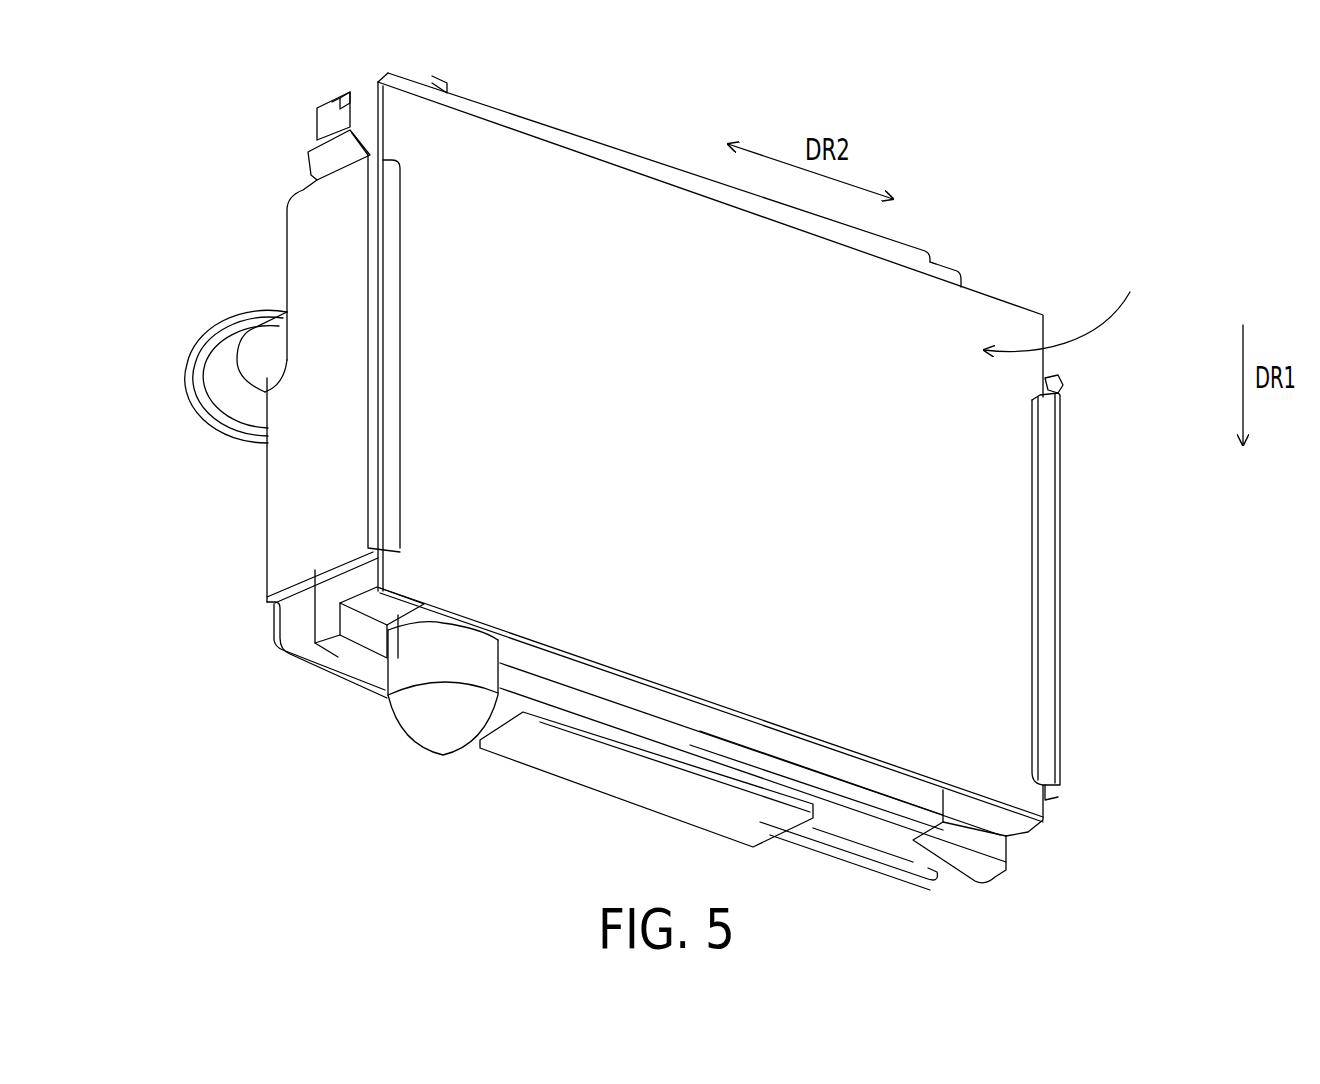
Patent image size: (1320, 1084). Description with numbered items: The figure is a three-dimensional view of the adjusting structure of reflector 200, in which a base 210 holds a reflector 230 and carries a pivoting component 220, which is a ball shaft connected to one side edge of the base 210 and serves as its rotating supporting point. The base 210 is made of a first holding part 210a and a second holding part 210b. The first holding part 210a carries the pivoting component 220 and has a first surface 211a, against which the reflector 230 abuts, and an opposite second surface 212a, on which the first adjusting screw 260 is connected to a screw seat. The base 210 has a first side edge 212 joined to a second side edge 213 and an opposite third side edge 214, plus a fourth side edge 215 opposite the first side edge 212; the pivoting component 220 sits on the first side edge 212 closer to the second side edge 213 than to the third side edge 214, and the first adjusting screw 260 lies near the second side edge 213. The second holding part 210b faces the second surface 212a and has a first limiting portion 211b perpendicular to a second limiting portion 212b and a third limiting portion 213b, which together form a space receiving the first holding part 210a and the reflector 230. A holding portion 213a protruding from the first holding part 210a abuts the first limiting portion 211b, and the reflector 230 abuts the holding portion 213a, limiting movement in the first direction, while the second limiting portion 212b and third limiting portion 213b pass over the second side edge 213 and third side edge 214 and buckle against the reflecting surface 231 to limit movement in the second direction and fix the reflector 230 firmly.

The adjusting structure of reflector 200 is at (1272, 939).
The base 210 is at (269, 686).
The first holding part 210a is at (363, 633).
The second holding part 210b is at (297, 640).
The first surface 211a is at (356, 109).
The first limiting portion 211b is at (563, 757).
The first side edge 212 is at (960, 870).
The second surface 212a is at (314, 125).
The second limiting portion 212b is at (385, 497).
The second side edge 213 is at (327, 602).
The holding portion 213a is at (888, 788).
The third limiting portion 213b is at (1050, 748).
The third side edge 214 is at (1006, 838).
The fourth side edge 215 is at (330, 96).
The pivoting component 220 is at (447, 738).
The reflector 230 is at (990, 296).
The reflecting surface 231 is at (1082, 305).
The first adjusting screw 260 is at (185, 362).